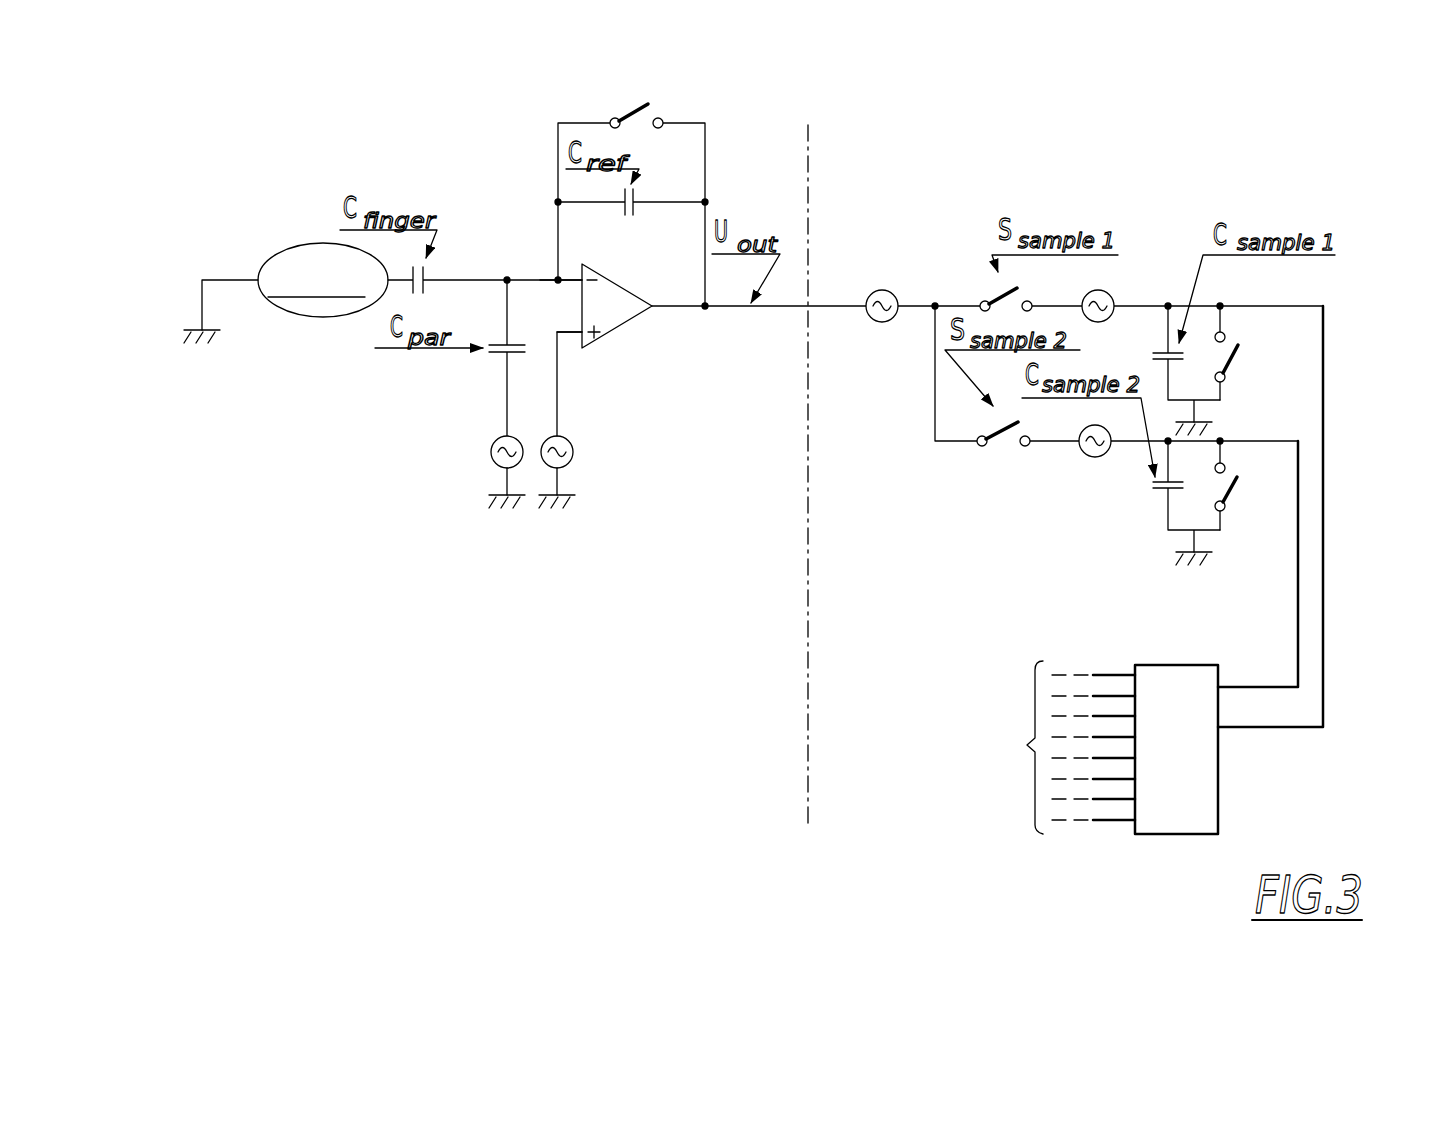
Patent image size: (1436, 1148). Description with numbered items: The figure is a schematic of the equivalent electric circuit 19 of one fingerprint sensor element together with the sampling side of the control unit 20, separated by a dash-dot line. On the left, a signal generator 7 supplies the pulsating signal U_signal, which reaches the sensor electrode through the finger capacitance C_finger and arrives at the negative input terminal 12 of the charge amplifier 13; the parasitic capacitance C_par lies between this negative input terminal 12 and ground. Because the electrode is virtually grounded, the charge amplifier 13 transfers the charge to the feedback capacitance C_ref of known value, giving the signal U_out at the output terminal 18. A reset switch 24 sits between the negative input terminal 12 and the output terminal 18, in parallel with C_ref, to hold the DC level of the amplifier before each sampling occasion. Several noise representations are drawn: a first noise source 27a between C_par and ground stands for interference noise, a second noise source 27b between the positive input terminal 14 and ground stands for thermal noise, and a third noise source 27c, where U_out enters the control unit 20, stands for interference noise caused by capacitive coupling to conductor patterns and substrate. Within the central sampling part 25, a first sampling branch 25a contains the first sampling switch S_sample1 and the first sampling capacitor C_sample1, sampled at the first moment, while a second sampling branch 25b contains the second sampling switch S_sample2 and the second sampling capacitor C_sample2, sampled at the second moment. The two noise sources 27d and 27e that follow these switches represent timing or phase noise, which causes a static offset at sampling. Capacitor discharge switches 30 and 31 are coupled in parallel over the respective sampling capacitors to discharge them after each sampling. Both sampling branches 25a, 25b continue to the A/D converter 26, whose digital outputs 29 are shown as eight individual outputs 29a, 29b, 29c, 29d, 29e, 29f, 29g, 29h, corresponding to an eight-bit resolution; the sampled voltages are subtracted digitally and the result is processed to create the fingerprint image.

The signal generator 7 is at (325, 334).
The negative input terminal 12 is at (566, 278).
The charge amplifier 13 is at (622, 320).
The positive input terminal 14 is at (573, 333).
The output terminal 18 is at (675, 308).
The equivalent circuit 19 is at (397, 598).
The control unit 20 is at (792, 680).
The reset switch 24 is at (608, 111).
The sampling part 25 is at (1145, 276).
The first sampling branch 25a is at (955, 306).
The second sampling branch 25b is at (930, 380).
The A/D converter 26 is at (1200, 756).
The first noise source 27a is at (490, 447).
The second noise source 27b is at (572, 448).
The third noise source 27c is at (870, 318).
The noise source 27d is at (1110, 288).
The noise source 27e is at (1090, 458).
The outputs 29 is at (1020, 748).
The output 29a is at (1120, 675).
The output 29b is at (1125, 696).
The output 29c is at (1128, 716).
The output 29d is at (1131, 737).
The output 29e is at (1129, 758).
The output 29f is at (1125, 779).
The output 29g is at (1121, 799).
The output 29h is at (1117, 820).
The capacitor discharge switch 30 is at (1252, 366).
The capacitor discharge switch 31 is at (1250, 490).